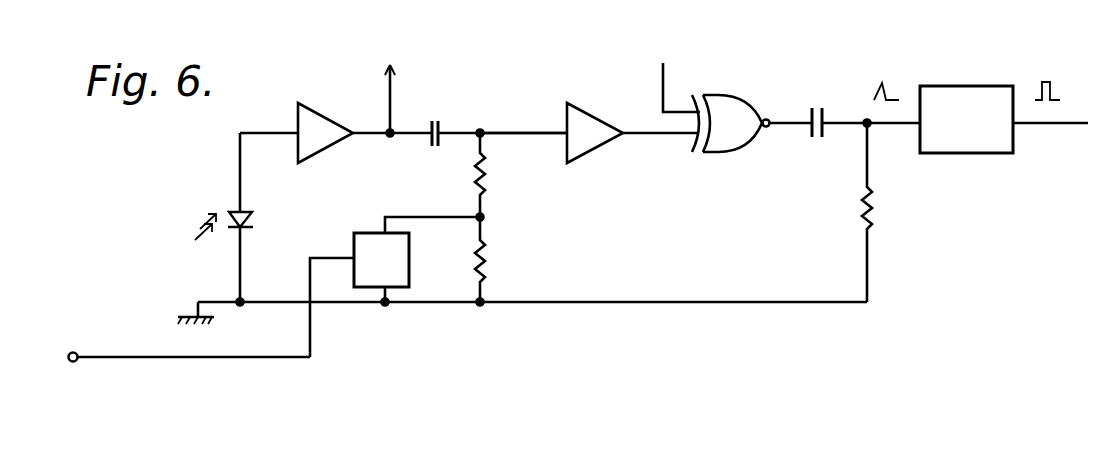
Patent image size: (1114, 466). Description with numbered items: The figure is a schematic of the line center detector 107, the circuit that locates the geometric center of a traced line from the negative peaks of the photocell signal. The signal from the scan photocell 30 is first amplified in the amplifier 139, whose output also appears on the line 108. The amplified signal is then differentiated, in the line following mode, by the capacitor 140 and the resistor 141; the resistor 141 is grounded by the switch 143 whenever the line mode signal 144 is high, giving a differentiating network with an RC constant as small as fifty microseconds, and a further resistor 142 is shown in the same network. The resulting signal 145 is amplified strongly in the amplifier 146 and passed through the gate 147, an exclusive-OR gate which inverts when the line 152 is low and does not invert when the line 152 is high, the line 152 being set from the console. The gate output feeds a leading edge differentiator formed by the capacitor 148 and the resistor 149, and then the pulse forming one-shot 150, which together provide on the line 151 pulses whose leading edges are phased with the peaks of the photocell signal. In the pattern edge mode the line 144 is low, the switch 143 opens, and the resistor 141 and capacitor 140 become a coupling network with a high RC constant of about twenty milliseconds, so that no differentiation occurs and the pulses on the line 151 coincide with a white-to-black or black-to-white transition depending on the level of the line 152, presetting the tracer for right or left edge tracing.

The amplifier 139 is at (312, 122).
The output line 108 is at (387, 97).
The capacitor 140 is at (434, 118).
The resulting signal 145 is at (540, 130).
The amplifier 146 is at (577, 125).
The line 152 is at (667, 75).
The exclusive-OR gate 147 is at (724, 105).
The leading edge differentiator capacitor 148 is at (818, 103).
The pulse forming one-shot 150 is at (982, 153).
The output line 151 is at (1062, 125).
The leading edge differentiator resistor 149 is at (871, 210).
The resistor 141 is at (486, 182).
The resistor 142 is at (487, 255).
The switch 143 is at (368, 250).
The line mode signal 144 is at (150, 331).
The scan photocell 30 is at (174, 222).
The line center detector 107 is at (509, 338).